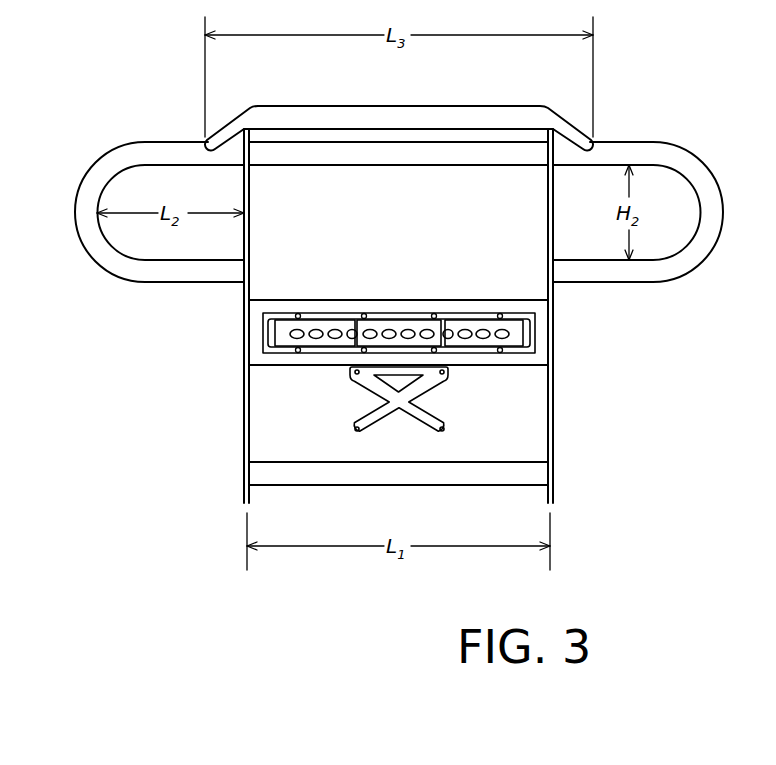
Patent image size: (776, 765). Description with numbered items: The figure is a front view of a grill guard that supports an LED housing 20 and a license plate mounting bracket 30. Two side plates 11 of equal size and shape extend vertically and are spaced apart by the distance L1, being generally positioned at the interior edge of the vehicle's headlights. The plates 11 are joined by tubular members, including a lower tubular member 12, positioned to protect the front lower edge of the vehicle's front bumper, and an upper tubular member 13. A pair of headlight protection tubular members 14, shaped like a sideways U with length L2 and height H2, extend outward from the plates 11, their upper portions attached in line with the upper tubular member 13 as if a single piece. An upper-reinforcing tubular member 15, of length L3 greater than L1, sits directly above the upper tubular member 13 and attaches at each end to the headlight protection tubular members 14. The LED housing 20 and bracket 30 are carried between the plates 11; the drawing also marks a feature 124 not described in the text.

The side plates 11 is at (242, 413).
The lower tubular member 12 is at (275, 482).
The upper tubular member 13 is at (478, 153).
The headlight protection tubular members 14 is at (142, 147).
The upper-reinforcing tubular member 15 is at (478, 110).
The LED housing 20 is at (445, 302).
The license plate mounting bracket 30 is at (368, 387).
The bottom edge of crossbar 124 is at (415, 523).